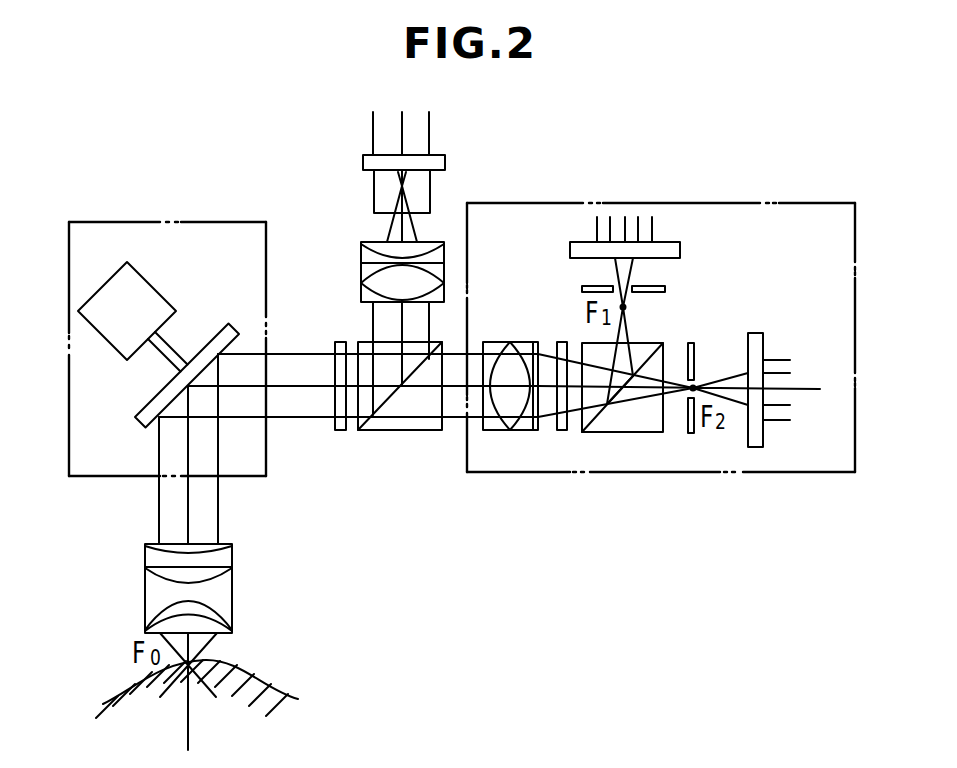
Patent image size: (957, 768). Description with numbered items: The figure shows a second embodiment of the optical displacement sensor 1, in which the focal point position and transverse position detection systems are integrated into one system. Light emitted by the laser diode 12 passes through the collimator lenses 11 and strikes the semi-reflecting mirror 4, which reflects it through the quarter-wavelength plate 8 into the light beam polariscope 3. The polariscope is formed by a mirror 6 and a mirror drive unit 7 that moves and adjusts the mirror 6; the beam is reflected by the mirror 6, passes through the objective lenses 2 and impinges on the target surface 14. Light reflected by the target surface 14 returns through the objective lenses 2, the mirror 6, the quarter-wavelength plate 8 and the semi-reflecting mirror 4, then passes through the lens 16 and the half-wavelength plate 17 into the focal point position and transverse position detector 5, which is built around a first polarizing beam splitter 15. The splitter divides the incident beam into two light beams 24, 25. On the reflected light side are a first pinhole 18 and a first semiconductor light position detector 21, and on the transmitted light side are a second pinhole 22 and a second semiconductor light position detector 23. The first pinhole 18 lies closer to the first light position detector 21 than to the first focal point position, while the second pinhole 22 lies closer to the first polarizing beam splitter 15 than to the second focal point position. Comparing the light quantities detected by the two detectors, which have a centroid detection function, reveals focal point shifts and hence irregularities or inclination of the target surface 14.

The optical displacement sensor 1 is at (596, 172).
The objective lenses 2 is at (233, 587).
The light beam polariscope 3 is at (266, 316).
The semi-reflecting mirror 4 is at (418, 432).
The focal point position and transverse position detector 5 is at (721, 474).
The mirror 6 is at (226, 324).
The mirror drive unit 7 is at (155, 290).
The quarter-wavelength plate 8 is at (340, 432).
The collimator lenses 11 is at (361, 263).
The laser diode 12 is at (430, 190).
The target surface 14 is at (247, 683).
The first polarizing beam splitter 15 is at (623, 434).
The lens 16 is at (510, 432).
The half-wavelength plate 17 is at (561, 432).
The first pinhole 18 is at (665, 289).
The first semiconductor light position detector 21 is at (673, 240).
The second pinhole 22 is at (691, 434).
The second semiconductor light position detector 23 is at (756, 448).
The light beam 24 is at (628, 330).
The light beam 25 is at (676, 402).